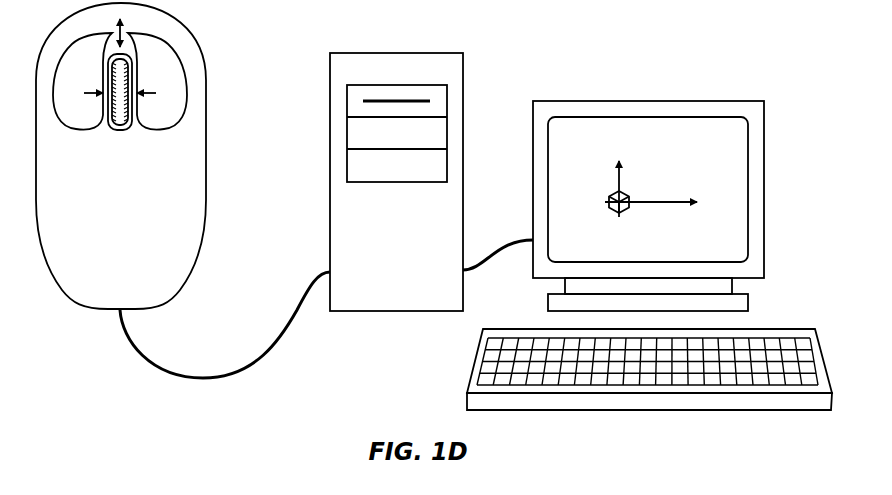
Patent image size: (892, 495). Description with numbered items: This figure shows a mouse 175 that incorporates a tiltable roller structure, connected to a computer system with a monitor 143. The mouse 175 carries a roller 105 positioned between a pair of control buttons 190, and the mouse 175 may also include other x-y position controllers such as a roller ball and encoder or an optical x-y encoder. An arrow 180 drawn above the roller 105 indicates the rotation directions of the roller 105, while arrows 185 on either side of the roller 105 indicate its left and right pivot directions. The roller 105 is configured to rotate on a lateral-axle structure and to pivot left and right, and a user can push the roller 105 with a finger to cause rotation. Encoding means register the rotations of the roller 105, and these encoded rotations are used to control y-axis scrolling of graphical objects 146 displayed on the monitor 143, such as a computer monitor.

The mouse 175 is at (130, 289).
The control buttons 190 is at (87, 130).
The roller 105 is at (120, 130).
The arrow 180 is at (138, 29).
The arrows 185 is at (120, 83).
The monitor 143 is at (648, 101).
The graphical objects 146 is at (630, 192).